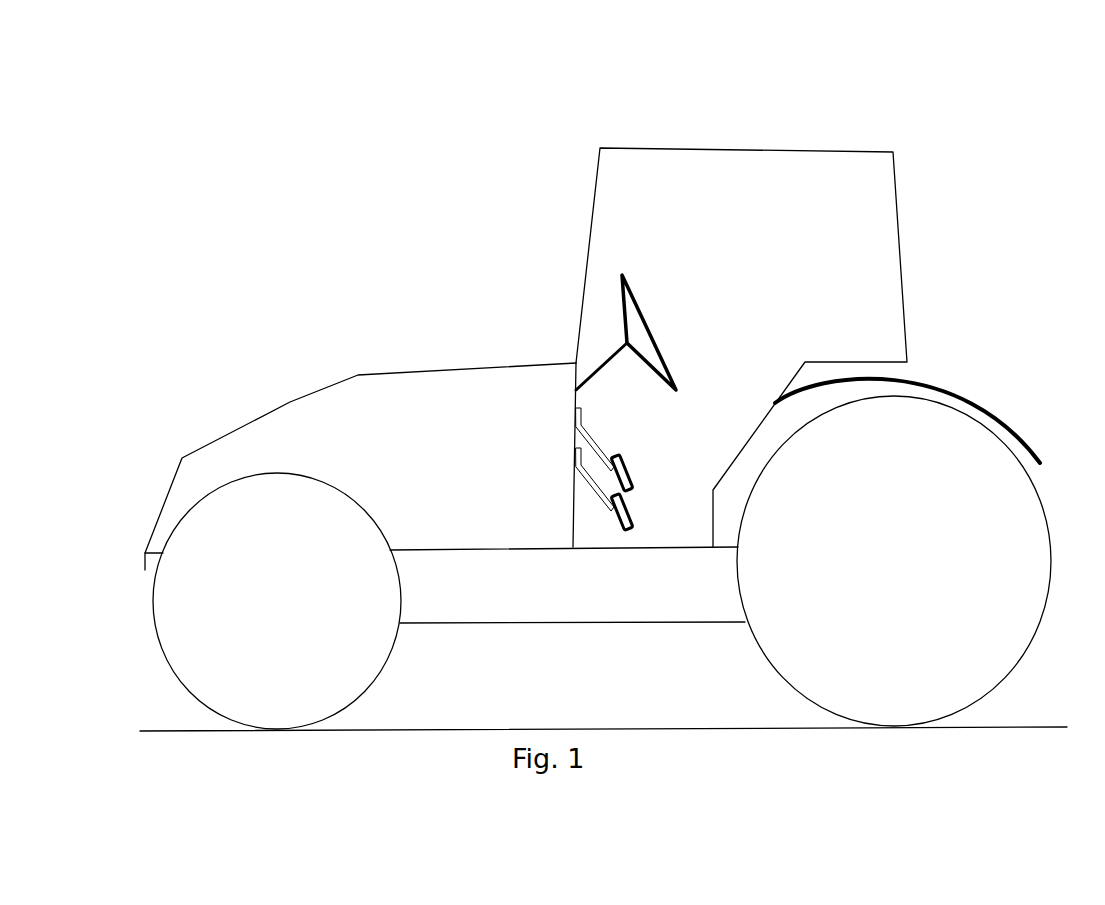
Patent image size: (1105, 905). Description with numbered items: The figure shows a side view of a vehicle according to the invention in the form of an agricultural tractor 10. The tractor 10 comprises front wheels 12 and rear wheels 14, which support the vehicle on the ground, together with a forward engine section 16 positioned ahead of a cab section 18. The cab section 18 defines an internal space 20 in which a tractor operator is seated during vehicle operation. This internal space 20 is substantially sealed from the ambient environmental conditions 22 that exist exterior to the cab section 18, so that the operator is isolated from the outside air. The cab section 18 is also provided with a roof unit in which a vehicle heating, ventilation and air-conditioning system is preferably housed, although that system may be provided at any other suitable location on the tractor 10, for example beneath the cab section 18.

The tractor 10 is at (197, 160).
The front wheels 12 is at (269, 711).
The rear wheels 14 is at (925, 683).
The forward engine section 16 is at (293, 410).
The cab section 18 is at (853, 237).
The internal space 20 is at (620, 307).
The ambient environmental conditions 22 is at (573, 463).